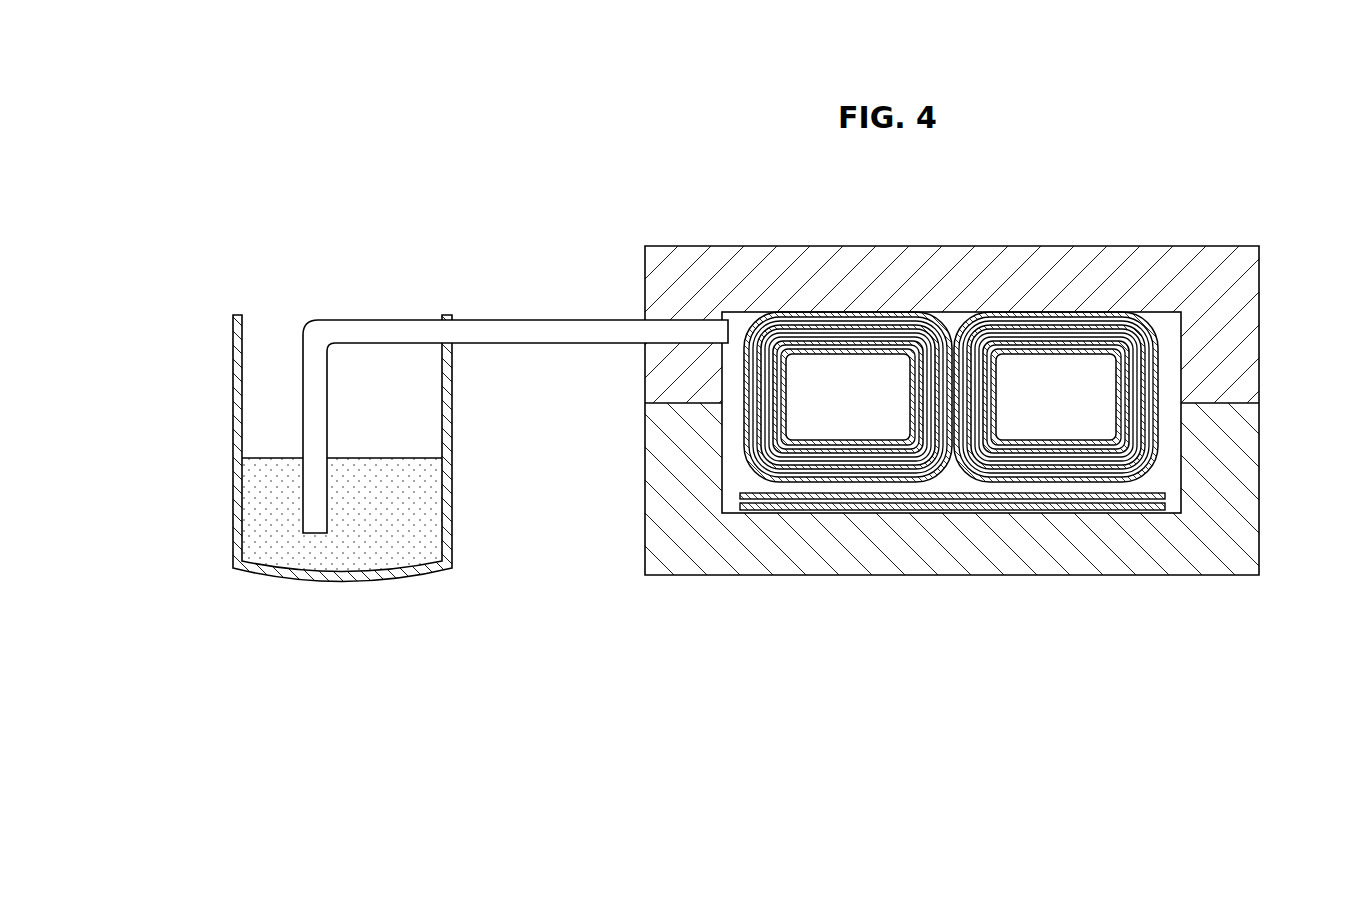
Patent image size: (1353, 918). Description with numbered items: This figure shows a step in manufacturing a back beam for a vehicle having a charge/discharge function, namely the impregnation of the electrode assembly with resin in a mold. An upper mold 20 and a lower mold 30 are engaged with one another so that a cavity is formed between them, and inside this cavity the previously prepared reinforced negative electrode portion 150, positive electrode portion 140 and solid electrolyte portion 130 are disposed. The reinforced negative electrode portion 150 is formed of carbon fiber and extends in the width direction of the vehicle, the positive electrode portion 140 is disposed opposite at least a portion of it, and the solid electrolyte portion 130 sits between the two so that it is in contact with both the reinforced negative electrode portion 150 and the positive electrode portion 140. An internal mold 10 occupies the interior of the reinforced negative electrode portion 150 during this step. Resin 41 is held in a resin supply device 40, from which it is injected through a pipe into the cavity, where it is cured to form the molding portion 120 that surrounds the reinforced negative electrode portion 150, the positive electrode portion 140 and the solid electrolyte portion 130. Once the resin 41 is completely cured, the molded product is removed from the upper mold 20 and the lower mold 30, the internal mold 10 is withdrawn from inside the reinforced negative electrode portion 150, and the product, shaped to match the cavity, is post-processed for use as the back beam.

The internal mold 10 is at (1056, 378).
The upper mold 20 is at (1238, 328).
The lower mold 30 is at (1238, 478).
The resin supply device 40 is at (429, 448).
The resin 41 is at (427, 532).
The molding portion 120 is at (1172, 375).
The solid electrolyte portion 130 is at (850, 499).
The positive electrode portion 140 is at (915, 510).
The reinforced negative electrode portion 150 is at (889, 313).